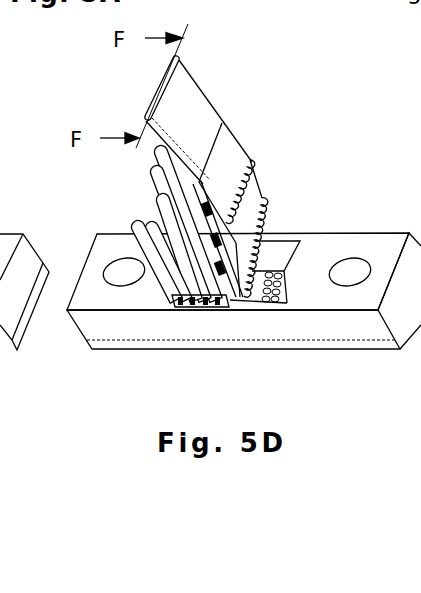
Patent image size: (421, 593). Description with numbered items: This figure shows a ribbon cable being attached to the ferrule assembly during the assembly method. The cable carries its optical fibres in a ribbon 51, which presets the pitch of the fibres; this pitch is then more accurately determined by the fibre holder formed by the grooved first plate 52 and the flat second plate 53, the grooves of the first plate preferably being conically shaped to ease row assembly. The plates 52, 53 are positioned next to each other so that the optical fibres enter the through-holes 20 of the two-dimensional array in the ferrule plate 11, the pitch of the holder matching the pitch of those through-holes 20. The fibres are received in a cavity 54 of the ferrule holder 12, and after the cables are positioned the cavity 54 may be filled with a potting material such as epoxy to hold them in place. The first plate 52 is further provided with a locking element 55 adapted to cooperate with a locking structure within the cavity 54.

The ferrule plate 11 is at (151, 346).
The ferrule holder 12 is at (99, 240).
The through-holes 20 is at (287, 272).
The ribbon 51 is at (196, 87).
The grooved first plate 52 is at (204, 298).
The flat second plate 53 is at (237, 148).
The cavity 54 is at (263, 245).
The locking element 55 is at (224, 272).